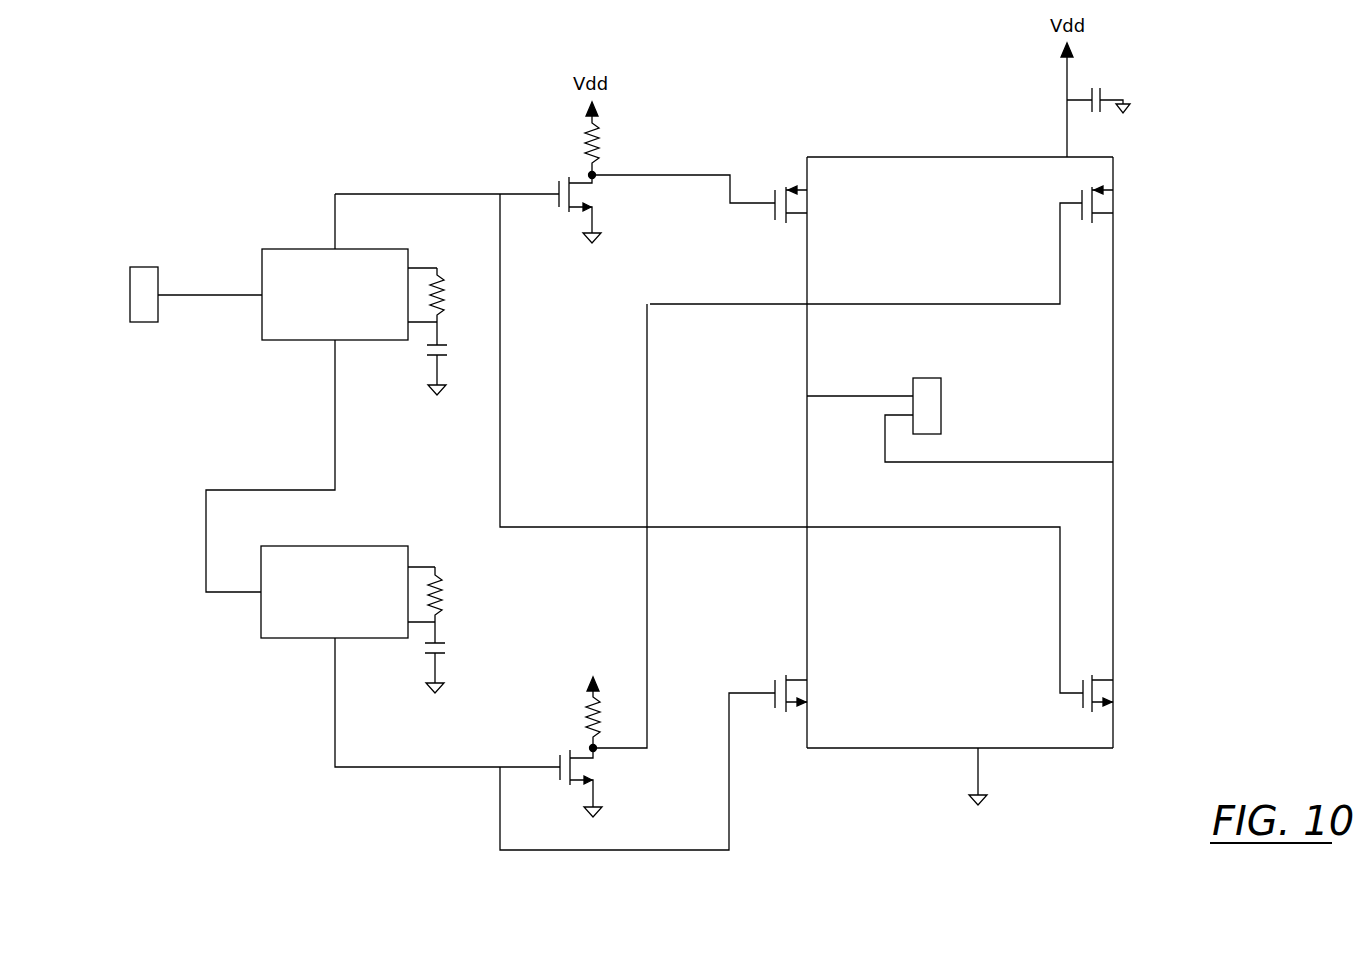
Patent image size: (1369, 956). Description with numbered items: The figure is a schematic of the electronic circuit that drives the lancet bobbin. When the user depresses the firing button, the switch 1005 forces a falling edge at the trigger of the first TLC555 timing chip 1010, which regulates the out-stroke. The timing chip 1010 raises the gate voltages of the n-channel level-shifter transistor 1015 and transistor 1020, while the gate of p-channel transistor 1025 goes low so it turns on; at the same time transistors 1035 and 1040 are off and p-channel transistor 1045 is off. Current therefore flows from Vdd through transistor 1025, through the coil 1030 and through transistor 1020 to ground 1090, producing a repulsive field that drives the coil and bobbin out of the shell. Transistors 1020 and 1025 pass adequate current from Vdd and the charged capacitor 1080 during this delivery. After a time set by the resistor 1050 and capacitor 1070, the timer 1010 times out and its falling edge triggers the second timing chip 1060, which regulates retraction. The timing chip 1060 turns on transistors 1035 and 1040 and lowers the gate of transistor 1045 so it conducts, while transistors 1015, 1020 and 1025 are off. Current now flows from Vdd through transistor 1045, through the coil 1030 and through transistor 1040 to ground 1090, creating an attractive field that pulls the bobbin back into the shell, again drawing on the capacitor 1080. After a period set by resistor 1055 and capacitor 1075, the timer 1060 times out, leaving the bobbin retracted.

The switch 1005 is at (142, 322).
The timing chip 1010 is at (283, 340).
The level-shifter transistor 1015 is at (604, 209).
The transistor 1020 is at (1125, 693).
The transistor 1025 is at (818, 204).
The coil 1030 is at (941, 383).
The transistor 1035 is at (604, 782).
The transistor 1040 is at (818, 693).
The transistor 1045 is at (1124, 204).
The resistor 1050 is at (464, 295).
The resistor 1055 is at (463, 594).
The timing chip 1060 is at (290, 638).
The capacitor 1070 is at (462, 358).
The capacitor 1075 is at (466, 657).
The capacitor 1080 is at (1101, 86).
The ground 1090 is at (978, 790).